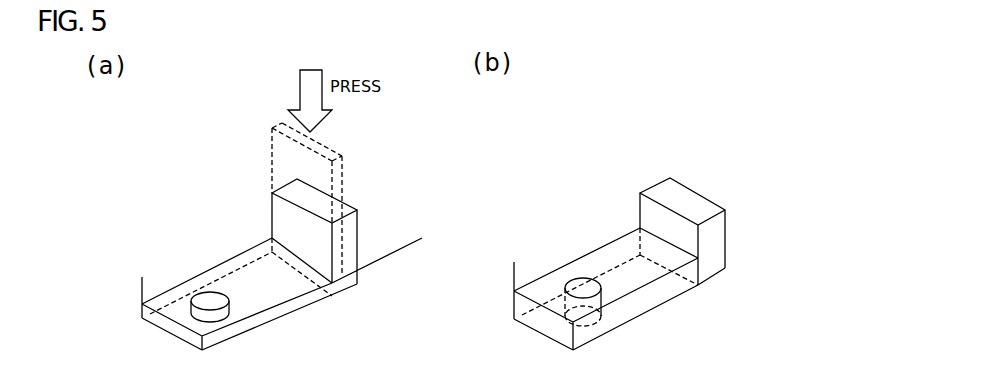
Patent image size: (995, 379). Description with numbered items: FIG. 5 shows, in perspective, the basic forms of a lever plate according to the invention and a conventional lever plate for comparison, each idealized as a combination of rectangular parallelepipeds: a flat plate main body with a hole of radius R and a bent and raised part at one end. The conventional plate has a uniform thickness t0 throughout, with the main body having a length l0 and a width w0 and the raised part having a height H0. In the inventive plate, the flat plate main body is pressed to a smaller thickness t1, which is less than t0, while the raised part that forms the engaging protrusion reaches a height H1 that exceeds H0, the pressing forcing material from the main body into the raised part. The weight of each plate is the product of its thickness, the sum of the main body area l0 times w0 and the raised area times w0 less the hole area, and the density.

The thickness of flat plate main body t1 is at (142, 318).
The thickness of conventional lever plate t0 is at (399, 272).
The height of bent and raised part H0 is at (378, 199).
The height of engaging protrusion H1 is at (342, 156).
The length of lever plate l0 is at (272, 223).
The width of lever plate w0 is at (142, 318).
The hole radius R is at (215, 292).